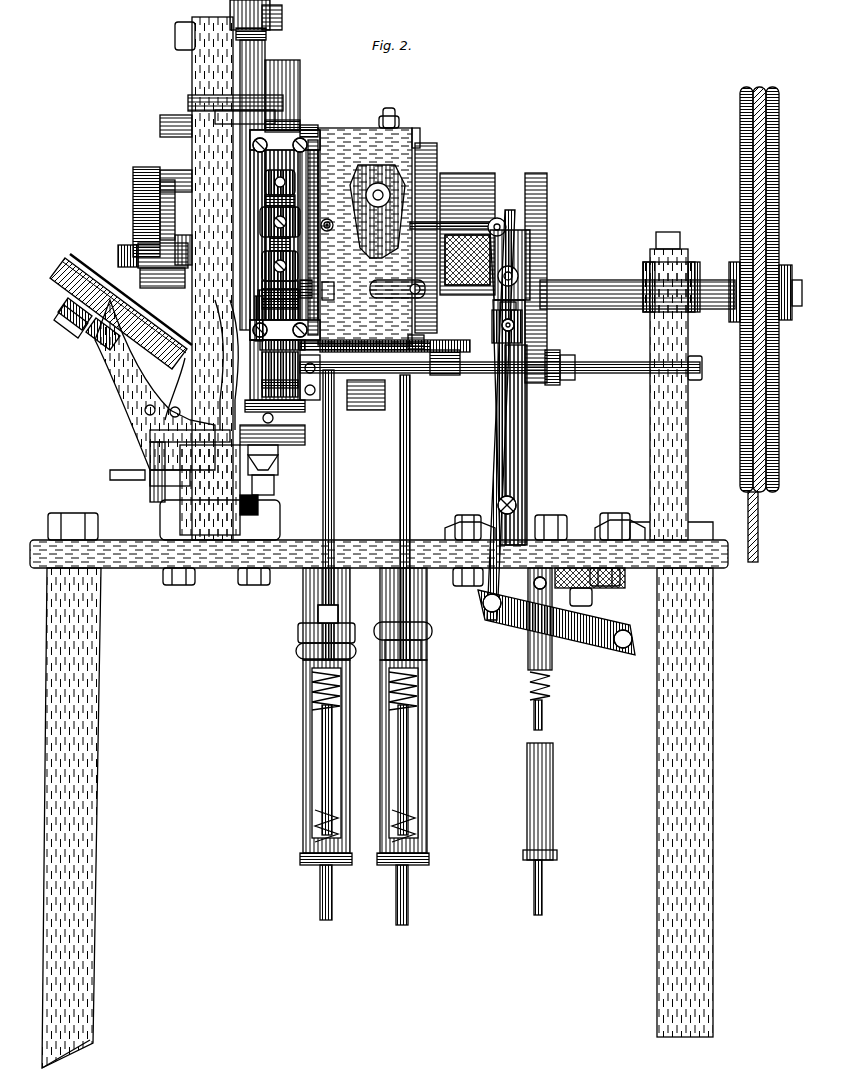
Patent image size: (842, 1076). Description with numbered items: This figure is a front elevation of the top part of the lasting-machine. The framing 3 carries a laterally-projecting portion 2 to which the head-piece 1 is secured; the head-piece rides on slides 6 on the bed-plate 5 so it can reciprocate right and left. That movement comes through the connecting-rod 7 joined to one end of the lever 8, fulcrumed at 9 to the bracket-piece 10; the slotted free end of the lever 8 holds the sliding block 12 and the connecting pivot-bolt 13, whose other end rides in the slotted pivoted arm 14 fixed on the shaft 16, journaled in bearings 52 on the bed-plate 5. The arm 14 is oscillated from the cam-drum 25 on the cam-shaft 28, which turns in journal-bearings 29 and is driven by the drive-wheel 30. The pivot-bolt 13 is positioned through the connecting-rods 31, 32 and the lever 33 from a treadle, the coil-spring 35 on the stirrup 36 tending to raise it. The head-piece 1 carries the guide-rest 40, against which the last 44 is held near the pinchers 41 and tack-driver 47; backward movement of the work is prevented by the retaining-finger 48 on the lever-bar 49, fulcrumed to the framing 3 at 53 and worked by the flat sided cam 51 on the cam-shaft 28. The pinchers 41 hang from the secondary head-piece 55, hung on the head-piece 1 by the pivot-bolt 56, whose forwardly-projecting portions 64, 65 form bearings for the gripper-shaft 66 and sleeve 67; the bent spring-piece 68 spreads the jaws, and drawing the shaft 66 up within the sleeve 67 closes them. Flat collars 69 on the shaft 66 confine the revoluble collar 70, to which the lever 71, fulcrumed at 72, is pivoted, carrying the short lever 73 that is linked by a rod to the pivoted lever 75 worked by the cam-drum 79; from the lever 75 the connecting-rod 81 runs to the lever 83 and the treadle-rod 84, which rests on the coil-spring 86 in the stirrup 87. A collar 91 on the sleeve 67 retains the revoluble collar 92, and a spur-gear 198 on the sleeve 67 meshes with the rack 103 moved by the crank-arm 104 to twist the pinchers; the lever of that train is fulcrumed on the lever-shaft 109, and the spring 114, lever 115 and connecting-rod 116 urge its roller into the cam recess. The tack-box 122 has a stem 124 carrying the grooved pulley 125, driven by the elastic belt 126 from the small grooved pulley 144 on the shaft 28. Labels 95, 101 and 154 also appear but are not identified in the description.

The head-piece 1 is at (412, 132).
The laterally-projecting portion 2 is at (437, 170).
The framing 3 is at (192, 78).
The bed-plate 5 is at (368, 542).
The slides 6 is at (425, 145).
The connecting-rod 7 is at (460, 222).
The lever 8 is at (530, 268).
The fulcrum 9 is at (530, 258).
The bracket-piece 10 is at (467, 260).
The sliding block 12 is at (522, 332).
The connecting pivot-bolt 13 is at (514, 324).
The pivoted arm 14 is at (527, 431).
The journaled shaft 16 is at (516, 504).
The cam-drum 25 is at (484, 173).
The cam-shaft 28 is at (604, 280).
The journal-bearings 29 is at (643, 318).
The drive-wheel 30 is at (779, 224).
The connecting-rod 31 is at (495, 450).
The connecting-rod 32 is at (534, 716).
The lever 33 is at (556, 611).
The coil-spring 35 is at (550, 688).
The stirrup 36 is at (527, 641).
The guide-rest 40 is at (290, 446).
The pinchers 41 is at (300, 414).
The last 44 is at (275, 391).
The tack-driver 47 is at (250, 76).
The retaining-finger 48 is at (175, 478).
The lever-bar 49 is at (222, 370).
The flat sided cam 51 is at (112, 262).
The bearings 52 is at (573, 530).
The fulcrum 53 is at (190, 258).
The secondary head-piece 55 is at (320, 135).
The pivot-bolt 56 is at (318, 144).
The forwardly-projecting portion 64 is at (300, 130).
The forwardly-projecting portion 65 is at (305, 340).
The gripper-shaft 66 is at (282, 120).
The sleeve 67 is at (280, 374).
The bent spring-piece 68 is at (295, 180).
The flat collars 69 is at (268, 240).
The revoluble collar 70 is at (296, 198).
The lever 71 is at (260, 214).
The fulcrum-bearing 72 is at (300, 280).
The short lever 73 is at (262, 279).
The pivoted lever 75 is at (418, 348).
The cam-drum 79 is at (362, 410).
The connecting-rod 81 is at (410, 488).
The lever 83 is at (427, 636).
The treadle-rod 84 is at (408, 888).
The coil-spring 86 is at (427, 684).
The stirrup 87 is at (382, 782).
The collar 91 is at (298, 248).
The collar 92 is at (300, 266).
The valve 95 is at (264, 258).
The screw 101 is at (326, 305).
The rack 103 is at (310, 298).
The crank-arm 104 is at (370, 246).
The lever-shaft 109 is at (612, 373).
The spring 114 is at (312, 692).
The lever 115 is at (298, 636).
The connecting-rod 116 is at (334, 486).
The tack-box 122 is at (76, 262).
The stem 124 is at (85, 340).
The grooved pulley 125 is at (112, 358).
The elastic belt 126 is at (142, 370).
The small grooved pulley 144 is at (104, 250).
The plate 154 is at (285, 425).
The spur-gear 198 is at (255, 291).